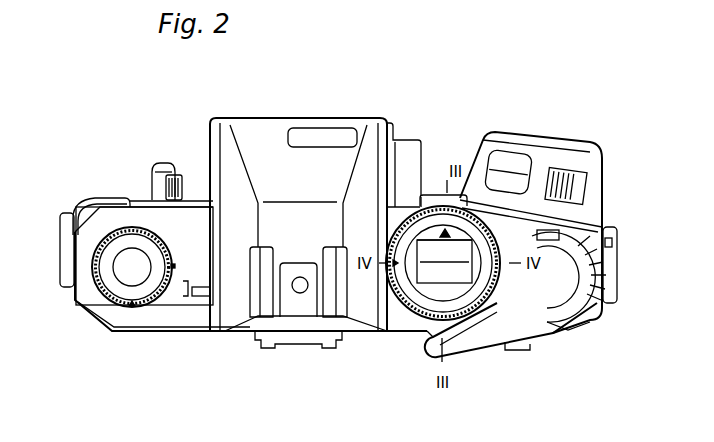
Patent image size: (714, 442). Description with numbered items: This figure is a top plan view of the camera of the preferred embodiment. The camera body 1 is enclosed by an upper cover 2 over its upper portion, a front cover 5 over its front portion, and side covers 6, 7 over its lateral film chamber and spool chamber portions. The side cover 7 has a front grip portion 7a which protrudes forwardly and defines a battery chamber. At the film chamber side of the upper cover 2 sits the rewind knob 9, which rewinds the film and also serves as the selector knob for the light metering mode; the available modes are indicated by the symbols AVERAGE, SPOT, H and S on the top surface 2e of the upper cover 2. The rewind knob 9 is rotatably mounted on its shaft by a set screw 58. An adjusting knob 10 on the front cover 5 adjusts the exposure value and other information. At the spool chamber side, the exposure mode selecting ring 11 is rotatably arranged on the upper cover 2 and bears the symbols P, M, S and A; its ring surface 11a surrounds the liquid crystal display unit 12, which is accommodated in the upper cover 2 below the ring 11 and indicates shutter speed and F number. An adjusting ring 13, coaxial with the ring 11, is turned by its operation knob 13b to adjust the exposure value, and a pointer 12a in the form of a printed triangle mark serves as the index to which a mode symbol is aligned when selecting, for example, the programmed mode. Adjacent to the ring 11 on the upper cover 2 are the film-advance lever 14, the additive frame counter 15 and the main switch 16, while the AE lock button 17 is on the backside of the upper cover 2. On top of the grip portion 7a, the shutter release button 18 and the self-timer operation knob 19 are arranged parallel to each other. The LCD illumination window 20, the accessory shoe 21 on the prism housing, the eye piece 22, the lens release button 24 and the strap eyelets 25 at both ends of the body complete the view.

The camera body 1 is at (617, 243).
The upper cover 2 is at (183, 320).
The top surface 2e is at (140, 217).
The front cover 5 is at (405, 150).
The side cover 6 is at (87, 210).
The side cover 7 is at (588, 160).
The front grip portion 7a is at (580, 152).
The rewind knob 9 is at (131, 306).
The adjusting knob 10 is at (170, 178).
The exposure mode selecting ring 11 is at (427, 320).
The dial ring 11a is at (403, 220).
The liquid crystal display unit 12 is at (420, 287).
The pointer 12a is at (457, 238).
The adjusting ring 13 is at (428, 194).
The operation knob 13b is at (447, 228).
The film-advance lever 14 is at (502, 327).
The additive frame counter 15 is at (600, 230).
The main switch 16 is at (580, 310).
The AE lock button 17 is at (520, 348).
The shutter release button 18 is at (510, 160).
The self-timer operation knob 19 is at (565, 170).
The LCD illumination window 20 is at (320, 137).
The accessory shoe 21 is at (265, 300).
The eye piece 22 is at (307, 346).
The lens release button 24 is at (168, 160).
The strap eyelets 25 is at (63, 288).
The set screw 58 is at (137, 263).